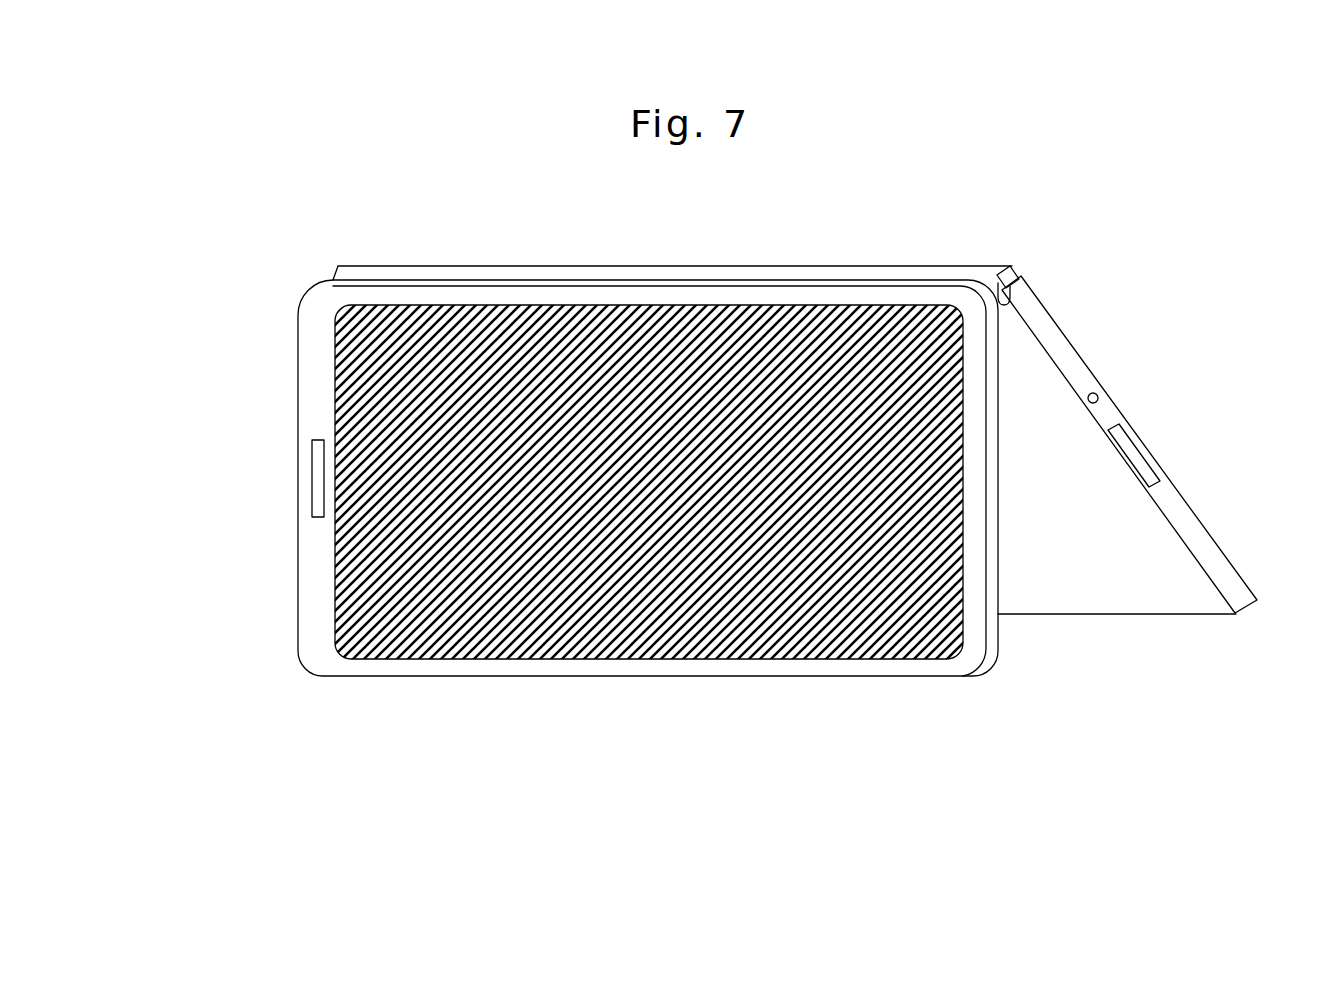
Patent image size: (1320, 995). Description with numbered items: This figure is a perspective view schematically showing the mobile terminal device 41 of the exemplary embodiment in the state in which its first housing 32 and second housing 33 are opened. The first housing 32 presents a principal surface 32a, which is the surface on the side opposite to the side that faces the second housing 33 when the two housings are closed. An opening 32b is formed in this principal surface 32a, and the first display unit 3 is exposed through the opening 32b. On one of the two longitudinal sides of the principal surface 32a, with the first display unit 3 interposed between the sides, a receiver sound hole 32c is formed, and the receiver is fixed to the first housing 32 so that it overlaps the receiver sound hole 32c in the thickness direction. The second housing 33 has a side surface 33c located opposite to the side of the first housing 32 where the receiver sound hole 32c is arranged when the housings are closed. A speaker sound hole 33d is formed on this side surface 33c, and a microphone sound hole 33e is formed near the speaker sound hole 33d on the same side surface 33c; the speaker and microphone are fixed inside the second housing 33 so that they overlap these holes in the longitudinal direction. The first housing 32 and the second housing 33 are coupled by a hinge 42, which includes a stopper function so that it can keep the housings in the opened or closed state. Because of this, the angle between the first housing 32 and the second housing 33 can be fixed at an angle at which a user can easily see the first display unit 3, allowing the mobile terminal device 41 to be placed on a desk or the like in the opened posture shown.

The first display unit 3 is at (358, 408).
The first housing 32 is at (581, 540).
The principal surface 32a is at (578, 668).
The opening 32b is at (505, 657).
The receiver sound hole 32c is at (315, 480).
The second housing 33 is at (1159, 511).
The side surface 33c is at (1192, 538).
The speaker sound hole 33d is at (1138, 457).
The microphone sound hole 33e is at (1098, 395).
The mobile terminal device 41 is at (1284, 108).
The hinge 42 is at (1003, 296).